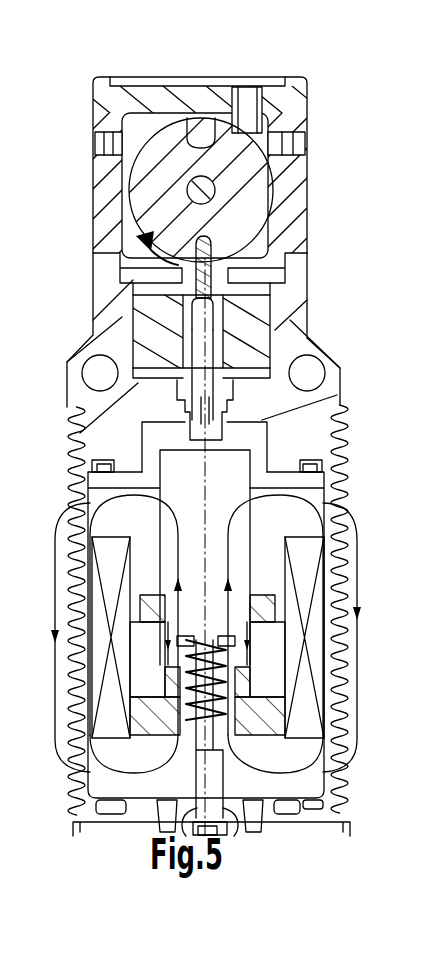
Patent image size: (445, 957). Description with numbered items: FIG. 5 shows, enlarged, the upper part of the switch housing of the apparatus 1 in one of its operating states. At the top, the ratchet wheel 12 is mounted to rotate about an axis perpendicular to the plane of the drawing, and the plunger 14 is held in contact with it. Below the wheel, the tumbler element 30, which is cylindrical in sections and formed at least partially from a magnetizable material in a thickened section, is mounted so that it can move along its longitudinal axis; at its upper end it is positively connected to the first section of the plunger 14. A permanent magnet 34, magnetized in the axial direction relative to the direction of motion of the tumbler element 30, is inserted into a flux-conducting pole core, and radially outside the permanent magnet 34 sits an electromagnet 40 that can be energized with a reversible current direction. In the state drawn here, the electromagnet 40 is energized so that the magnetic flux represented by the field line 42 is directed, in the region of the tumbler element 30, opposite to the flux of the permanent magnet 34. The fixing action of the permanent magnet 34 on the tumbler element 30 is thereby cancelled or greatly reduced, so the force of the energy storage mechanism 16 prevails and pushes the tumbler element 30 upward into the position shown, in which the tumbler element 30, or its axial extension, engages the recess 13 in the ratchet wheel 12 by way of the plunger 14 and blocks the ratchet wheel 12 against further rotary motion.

The apparatus 1 is at (336, 71).
The ratchet wheel 12 is at (248, 182).
The recess 13 is at (222, 236).
The plunger 14 is at (209, 353).
The tumbler element 30 is at (219, 478).
The electromagnet 40 is at (312, 644).
The permanent magnet 34 is at (277, 661).
The field line 42 is at (357, 567).
The energy storage mechanism 16 is at (293, 803).